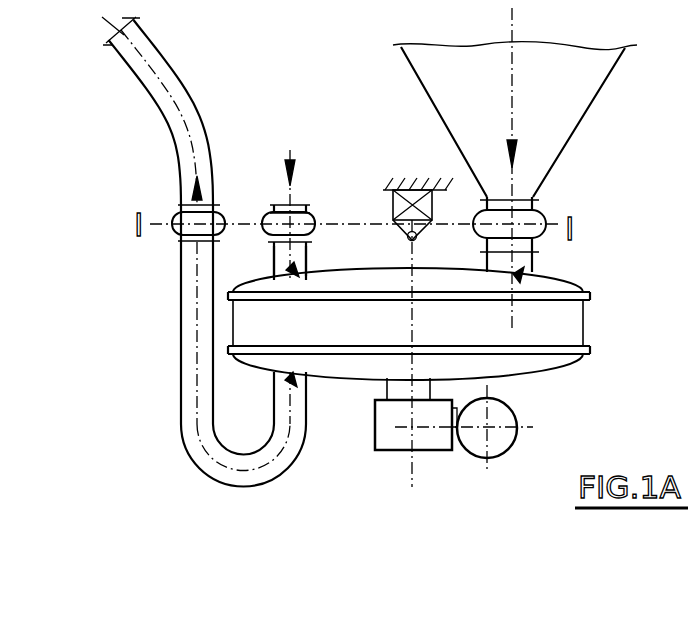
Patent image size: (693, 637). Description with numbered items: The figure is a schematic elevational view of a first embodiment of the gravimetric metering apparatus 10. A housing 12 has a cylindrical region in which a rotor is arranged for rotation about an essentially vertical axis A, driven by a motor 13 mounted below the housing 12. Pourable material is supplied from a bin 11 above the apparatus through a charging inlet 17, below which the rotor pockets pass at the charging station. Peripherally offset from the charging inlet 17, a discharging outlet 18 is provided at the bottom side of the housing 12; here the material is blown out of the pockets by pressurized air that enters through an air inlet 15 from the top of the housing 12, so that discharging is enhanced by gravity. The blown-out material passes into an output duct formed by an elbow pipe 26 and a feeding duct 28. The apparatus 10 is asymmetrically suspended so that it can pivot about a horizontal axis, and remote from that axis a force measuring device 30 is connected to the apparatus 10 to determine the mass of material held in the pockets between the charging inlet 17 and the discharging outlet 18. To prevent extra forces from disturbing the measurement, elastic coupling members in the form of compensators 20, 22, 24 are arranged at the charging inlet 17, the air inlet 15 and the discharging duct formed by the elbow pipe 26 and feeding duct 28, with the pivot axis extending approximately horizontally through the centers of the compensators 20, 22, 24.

The gravimetric metering apparatus 10 is at (600, 276).
The bin 11 is at (570, 147).
The housing 12 is at (583, 327).
The motor 13 is at (472, 457).
The air inlet 15 is at (307, 257).
The charging inlet 17 is at (537, 268).
The discharging outlet 18 is at (288, 387).
The compensator 20 is at (563, 197).
The compensator 22 is at (308, 207).
The compensator 24 is at (233, 207).
The elbow pipe 26 is at (240, 487).
The feeding duct 28 is at (187, 85).
The force measuring device 30 is at (392, 207).
The vertical axis A is at (405, 480).